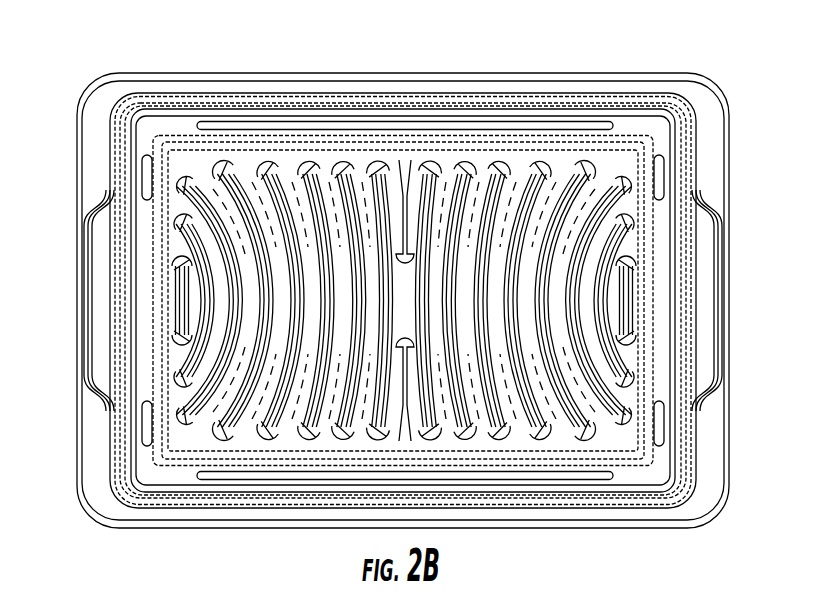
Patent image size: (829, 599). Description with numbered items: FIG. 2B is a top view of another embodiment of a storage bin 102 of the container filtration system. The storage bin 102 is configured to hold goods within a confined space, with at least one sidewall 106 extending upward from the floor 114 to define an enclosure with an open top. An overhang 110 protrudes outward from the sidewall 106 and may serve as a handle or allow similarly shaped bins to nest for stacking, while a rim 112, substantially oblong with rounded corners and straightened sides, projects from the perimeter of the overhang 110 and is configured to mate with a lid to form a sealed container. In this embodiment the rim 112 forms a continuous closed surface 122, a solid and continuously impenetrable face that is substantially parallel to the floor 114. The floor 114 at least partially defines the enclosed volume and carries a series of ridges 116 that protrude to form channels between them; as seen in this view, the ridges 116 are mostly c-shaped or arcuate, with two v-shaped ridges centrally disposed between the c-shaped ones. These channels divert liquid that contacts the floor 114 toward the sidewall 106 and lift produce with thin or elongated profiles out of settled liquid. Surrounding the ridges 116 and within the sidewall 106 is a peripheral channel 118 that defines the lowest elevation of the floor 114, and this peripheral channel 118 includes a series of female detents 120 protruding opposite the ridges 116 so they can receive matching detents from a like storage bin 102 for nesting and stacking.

The storage bin 102 is at (690, 72).
The sidewall 106 is at (177, 105).
The overhang 110 is at (100, 105).
The rim 112 is at (88, 218).
The floor 114 is at (588, 169).
The ridges 116 is at (632, 276).
The peripheral channel 118 is at (263, 138).
The female detents 120 is at (664, 184).
The continuous closed surface 122 is at (102, 313).